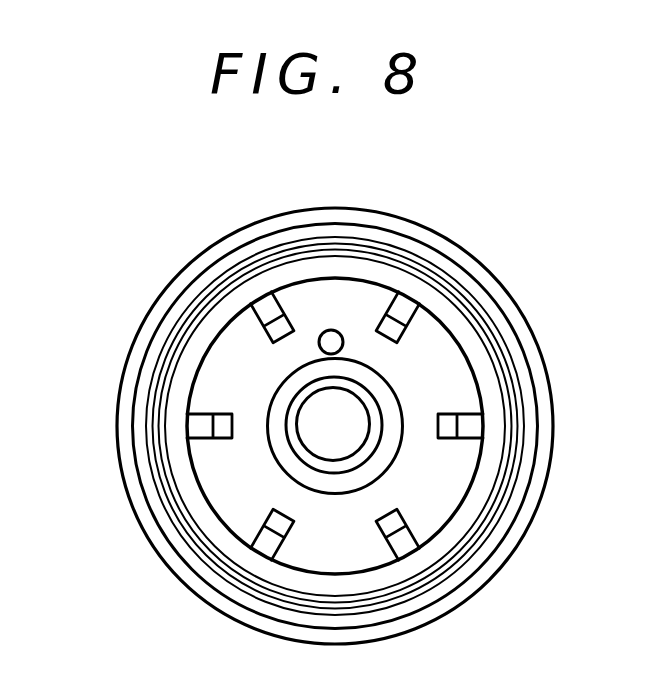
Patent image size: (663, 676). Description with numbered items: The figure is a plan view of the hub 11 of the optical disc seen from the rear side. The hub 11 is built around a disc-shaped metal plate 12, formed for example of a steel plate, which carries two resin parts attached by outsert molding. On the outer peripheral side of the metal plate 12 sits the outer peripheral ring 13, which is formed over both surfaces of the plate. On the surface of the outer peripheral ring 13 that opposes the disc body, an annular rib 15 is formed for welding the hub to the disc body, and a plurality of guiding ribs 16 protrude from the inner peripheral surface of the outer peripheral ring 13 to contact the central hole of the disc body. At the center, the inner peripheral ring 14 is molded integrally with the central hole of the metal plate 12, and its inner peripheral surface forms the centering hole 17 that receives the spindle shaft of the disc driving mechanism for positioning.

The hub 11 is at (177, 578).
The metal plate 12 is at (217, 473).
The outer peripheral ring 13 is at (173, 310).
The inner peripheral ring 14 is at (288, 400).
The rib 15 is at (222, 272).
The guiding ribs 16 is at (287, 320).
The centering hole 17 is at (350, 437).